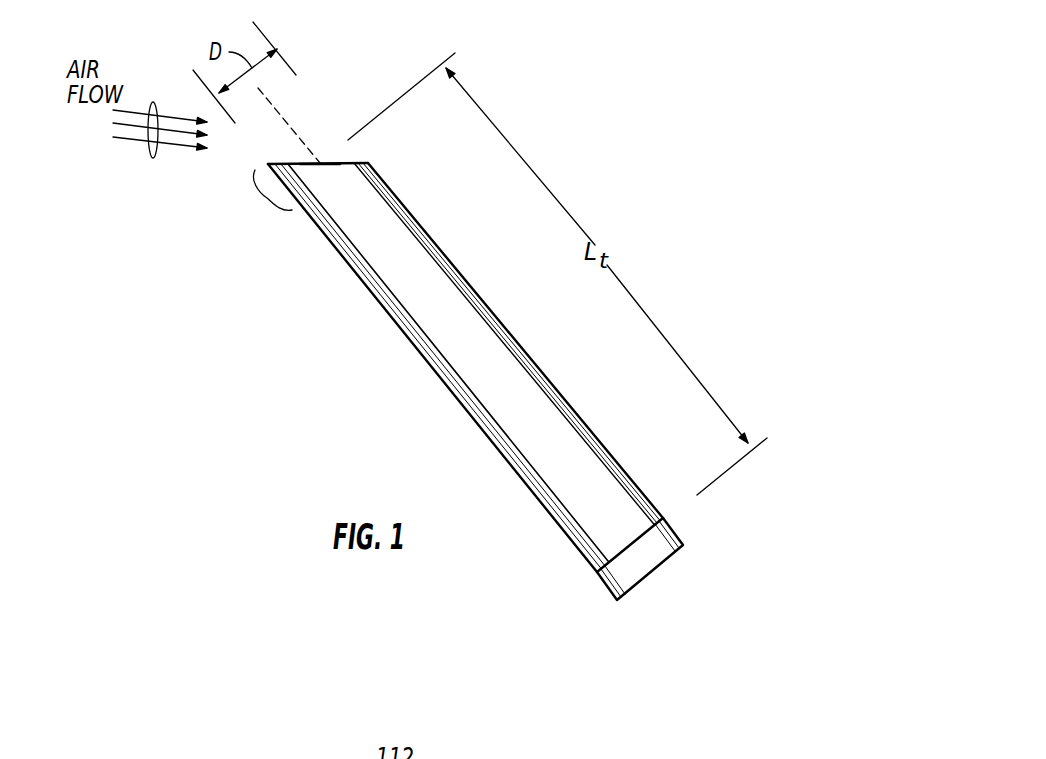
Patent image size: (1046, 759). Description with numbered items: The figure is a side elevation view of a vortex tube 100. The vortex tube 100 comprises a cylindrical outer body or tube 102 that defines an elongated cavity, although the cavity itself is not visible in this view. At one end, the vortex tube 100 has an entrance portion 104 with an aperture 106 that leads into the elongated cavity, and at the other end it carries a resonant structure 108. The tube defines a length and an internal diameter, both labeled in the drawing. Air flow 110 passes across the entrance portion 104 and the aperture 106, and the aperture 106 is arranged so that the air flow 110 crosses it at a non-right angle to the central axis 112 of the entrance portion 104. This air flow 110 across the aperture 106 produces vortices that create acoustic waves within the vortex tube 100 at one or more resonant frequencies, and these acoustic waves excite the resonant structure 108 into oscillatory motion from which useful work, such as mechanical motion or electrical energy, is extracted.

The vortex tube 100 is at (620, 158).
The cylindrical outer body or tube 102 is at (457, 380).
The entrance portion 104 is at (267, 198).
The aperture 106 is at (329, 150).
The resonant structure 108 is at (668, 528).
The air flow 110 is at (152, 160).
The central axis 112 is at (282, 117).